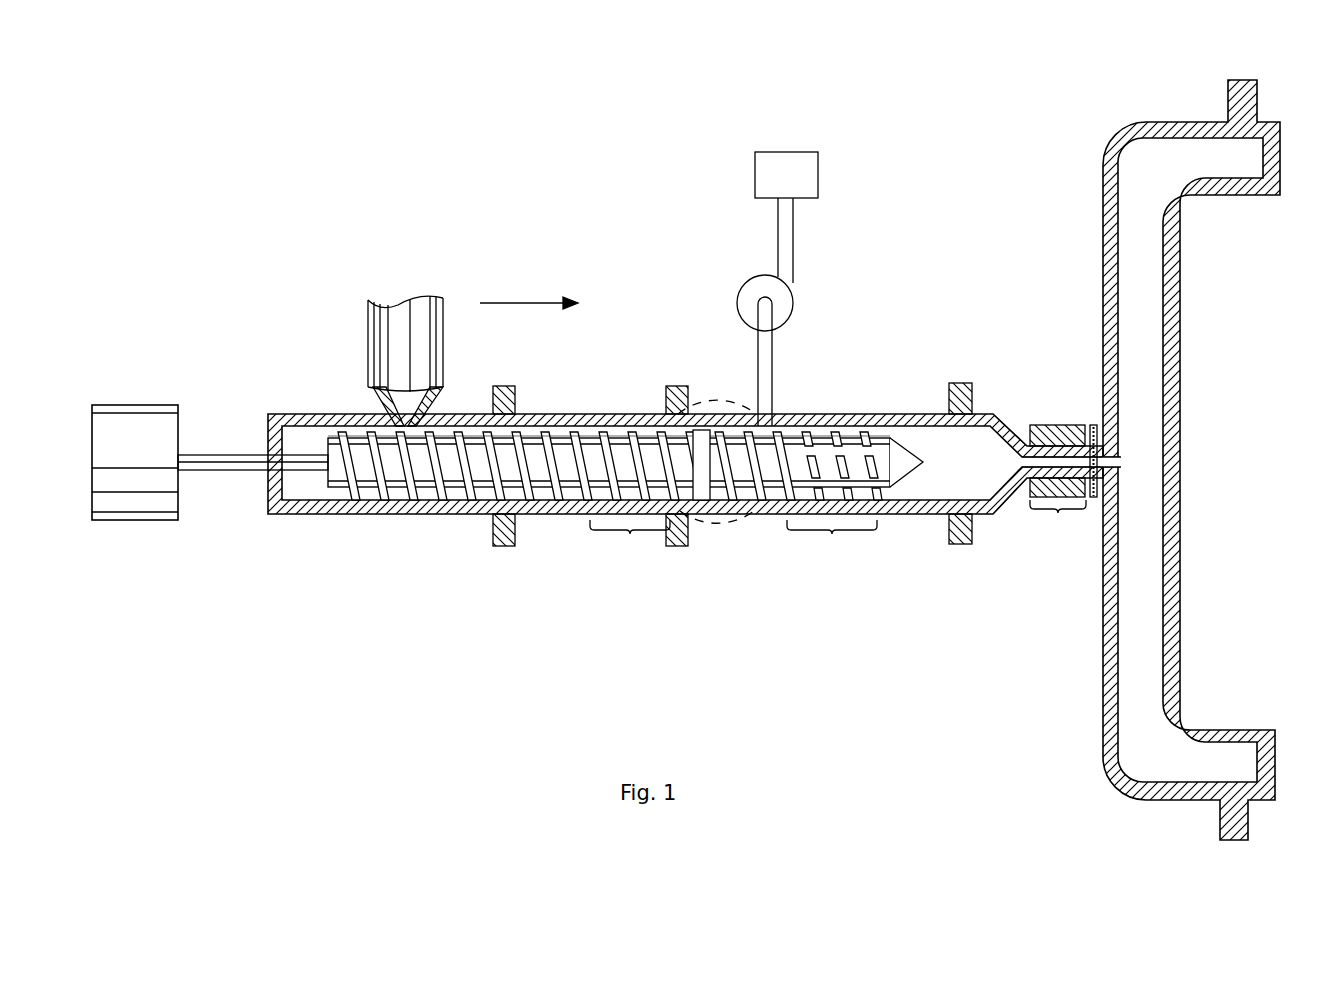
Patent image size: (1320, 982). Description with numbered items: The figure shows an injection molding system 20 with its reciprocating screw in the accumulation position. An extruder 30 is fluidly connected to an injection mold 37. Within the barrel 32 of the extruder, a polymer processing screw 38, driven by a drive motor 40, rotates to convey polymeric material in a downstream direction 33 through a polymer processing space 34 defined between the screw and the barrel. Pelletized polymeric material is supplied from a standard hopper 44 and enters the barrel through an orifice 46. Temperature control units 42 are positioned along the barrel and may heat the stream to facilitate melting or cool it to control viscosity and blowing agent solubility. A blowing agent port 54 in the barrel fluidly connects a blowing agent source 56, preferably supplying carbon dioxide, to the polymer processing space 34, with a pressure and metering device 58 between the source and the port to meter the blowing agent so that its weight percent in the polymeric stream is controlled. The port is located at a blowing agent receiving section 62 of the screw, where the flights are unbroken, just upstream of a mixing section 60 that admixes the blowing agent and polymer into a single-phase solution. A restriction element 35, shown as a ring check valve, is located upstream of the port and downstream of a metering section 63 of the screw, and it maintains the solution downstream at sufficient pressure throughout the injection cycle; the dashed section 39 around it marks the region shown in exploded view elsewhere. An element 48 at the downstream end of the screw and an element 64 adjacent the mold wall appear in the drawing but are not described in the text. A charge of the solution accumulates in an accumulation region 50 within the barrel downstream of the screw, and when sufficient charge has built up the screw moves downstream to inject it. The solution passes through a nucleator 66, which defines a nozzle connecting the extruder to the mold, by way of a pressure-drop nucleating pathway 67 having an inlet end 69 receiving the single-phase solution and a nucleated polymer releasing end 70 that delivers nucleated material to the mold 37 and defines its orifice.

The injection molding system 20 is at (586, 632).
The extruder 30 is at (490, 198).
The barrel 32 is at (372, 518).
The downstream direction 33 is at (529, 294).
The polymer processing space 34 is at (545, 418).
The restriction element 35 is at (700, 430).
The injection mold 37 is at (1108, 150).
The polymer processing screw 38 is at (598, 438).
The section 39 is at (710, 530).
The drive motor 40 is at (130, 405).
The temperature control units 42 is at (503, 386).
The hopper 44 is at (408, 320).
The orifice 46 is at (395, 400).
The screw tip 48 is at (905, 462).
The accumulation region 50 is at (988, 455).
The blowing agent port 54 is at (770, 378).
The blowing agent source 56 is at (780, 152).
The pressure and metering device 58 is at (745, 282).
The mixing section 60 is at (832, 540).
The blowing agent receiving section 62 is at (752, 515).
The metering section 63 is at (630, 540).
The seal 64 is at (1093, 425).
The nucleator 66 is at (1058, 505).
The nucleating pathway 67 is at (1050, 455).
The inlet end 69 is at (1030, 462).
The nucleated polymer releasing end 70 is at (1115, 458).